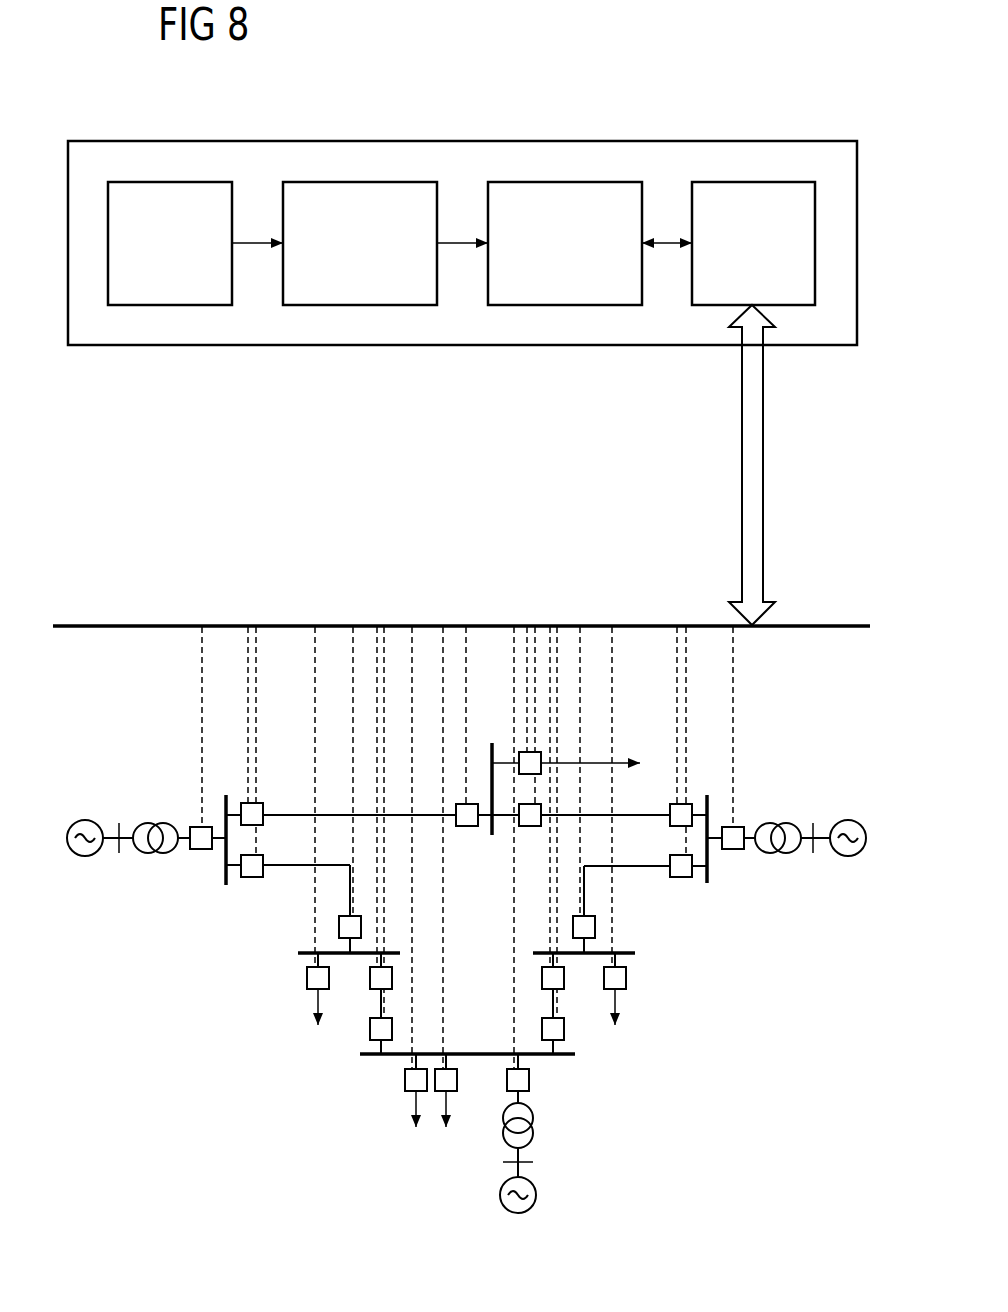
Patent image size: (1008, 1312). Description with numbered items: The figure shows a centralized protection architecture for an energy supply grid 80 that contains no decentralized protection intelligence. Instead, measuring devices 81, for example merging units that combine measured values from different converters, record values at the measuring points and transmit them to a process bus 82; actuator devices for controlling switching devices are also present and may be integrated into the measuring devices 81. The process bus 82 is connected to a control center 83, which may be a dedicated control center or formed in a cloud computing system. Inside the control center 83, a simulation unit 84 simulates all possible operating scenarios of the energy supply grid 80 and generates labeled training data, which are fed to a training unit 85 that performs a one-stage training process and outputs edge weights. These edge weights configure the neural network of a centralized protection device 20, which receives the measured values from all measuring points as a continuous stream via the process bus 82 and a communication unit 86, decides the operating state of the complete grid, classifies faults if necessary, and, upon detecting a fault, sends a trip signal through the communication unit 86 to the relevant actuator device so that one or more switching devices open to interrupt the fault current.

The energy supply grid 80 is at (466, 920).
The measuring device 81 is at (252, 878).
The process bus 82 is at (126, 624).
The control center 83 is at (467, 141).
The simulation unit 84 is at (182, 257).
The training unit 85 is at (372, 257).
The protection device 20 is at (577, 257).
The communication unit 86 is at (765, 257).